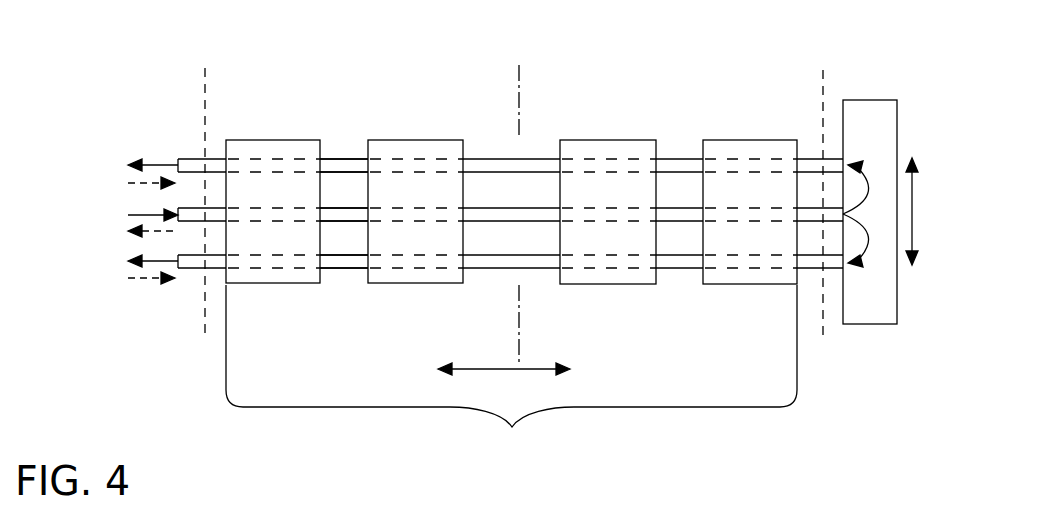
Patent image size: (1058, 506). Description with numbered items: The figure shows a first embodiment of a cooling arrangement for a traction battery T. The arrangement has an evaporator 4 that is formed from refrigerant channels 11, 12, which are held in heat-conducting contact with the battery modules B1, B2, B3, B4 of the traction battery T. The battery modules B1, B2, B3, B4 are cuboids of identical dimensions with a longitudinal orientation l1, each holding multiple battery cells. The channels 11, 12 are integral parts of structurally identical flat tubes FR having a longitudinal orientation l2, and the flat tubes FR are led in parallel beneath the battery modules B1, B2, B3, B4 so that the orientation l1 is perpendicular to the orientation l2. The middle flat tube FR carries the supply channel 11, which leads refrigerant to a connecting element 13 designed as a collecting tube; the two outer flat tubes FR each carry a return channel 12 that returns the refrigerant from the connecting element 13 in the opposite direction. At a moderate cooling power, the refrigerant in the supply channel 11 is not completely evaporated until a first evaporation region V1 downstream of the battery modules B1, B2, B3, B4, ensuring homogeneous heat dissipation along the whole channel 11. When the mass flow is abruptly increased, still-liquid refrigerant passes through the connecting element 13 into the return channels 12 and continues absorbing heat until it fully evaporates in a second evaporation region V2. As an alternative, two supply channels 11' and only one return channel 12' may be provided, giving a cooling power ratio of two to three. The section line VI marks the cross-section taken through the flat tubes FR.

The evaporator 4 is at (662, 68).
The channel 11 is at (164, 293).
The supply channel 11' is at (122, 259).
The channel 12 is at (169, 250).
The return channel 12' is at (118, 265).
The connecting element 13 is at (868, 324).
The battery module B1 is at (282, 140).
The battery module B2 is at (426, 140).
The battery module B3 is at (609, 140).
The battery module B4 is at (763, 140).
The flat tube FR is at (340, 160).
The first evaporation region V1 is at (823, 89).
The second evaporation region V2 is at (205, 90).
The section line VI is at (570, 58).
The longitudinal orientation l1 is at (920, 211).
The longitudinal orientation l2 is at (504, 384).
The traction battery T is at (511, 374).